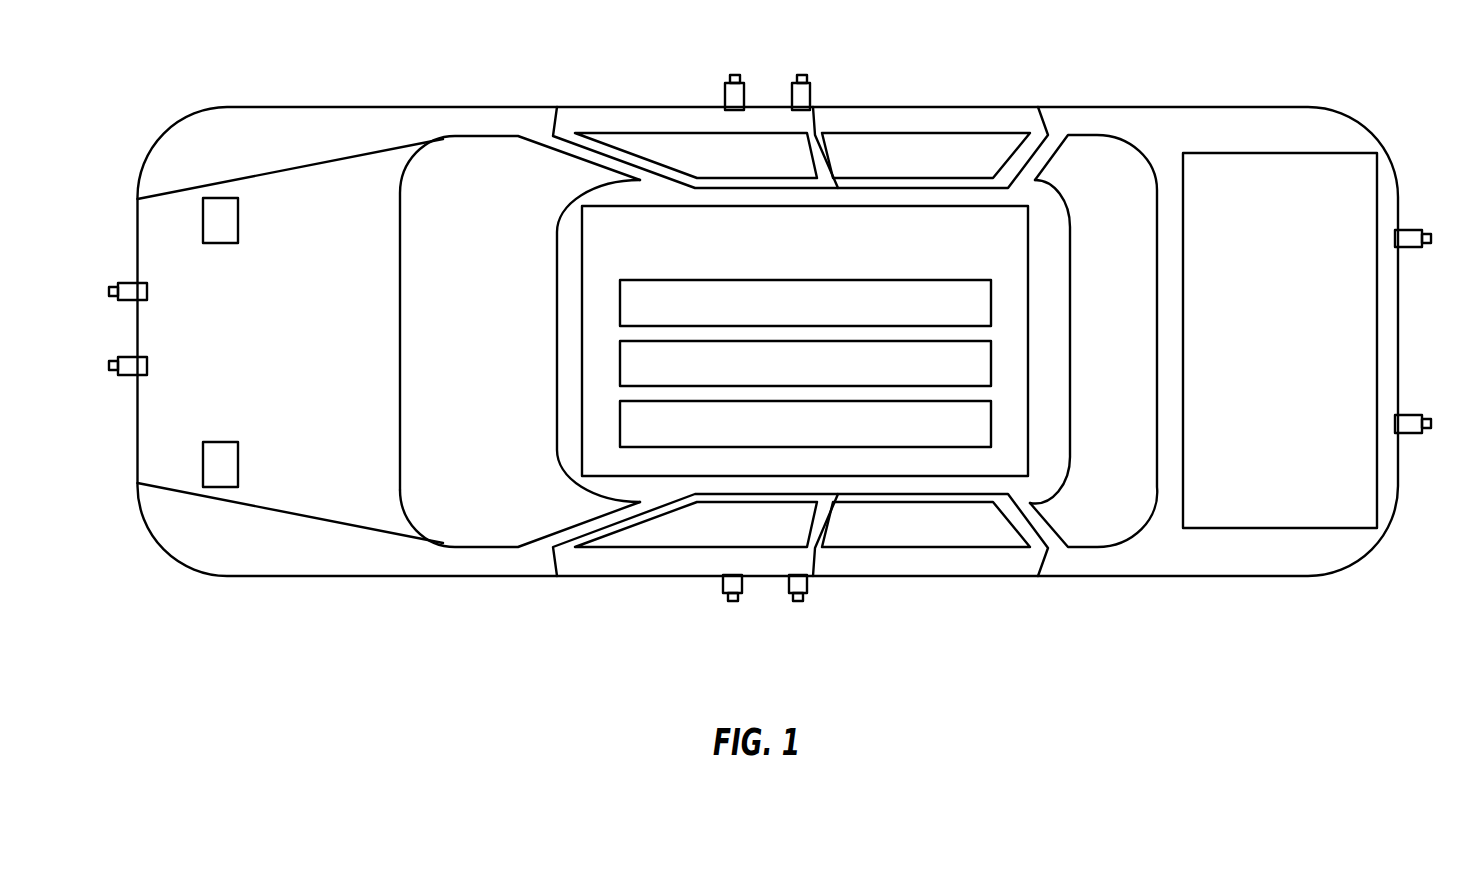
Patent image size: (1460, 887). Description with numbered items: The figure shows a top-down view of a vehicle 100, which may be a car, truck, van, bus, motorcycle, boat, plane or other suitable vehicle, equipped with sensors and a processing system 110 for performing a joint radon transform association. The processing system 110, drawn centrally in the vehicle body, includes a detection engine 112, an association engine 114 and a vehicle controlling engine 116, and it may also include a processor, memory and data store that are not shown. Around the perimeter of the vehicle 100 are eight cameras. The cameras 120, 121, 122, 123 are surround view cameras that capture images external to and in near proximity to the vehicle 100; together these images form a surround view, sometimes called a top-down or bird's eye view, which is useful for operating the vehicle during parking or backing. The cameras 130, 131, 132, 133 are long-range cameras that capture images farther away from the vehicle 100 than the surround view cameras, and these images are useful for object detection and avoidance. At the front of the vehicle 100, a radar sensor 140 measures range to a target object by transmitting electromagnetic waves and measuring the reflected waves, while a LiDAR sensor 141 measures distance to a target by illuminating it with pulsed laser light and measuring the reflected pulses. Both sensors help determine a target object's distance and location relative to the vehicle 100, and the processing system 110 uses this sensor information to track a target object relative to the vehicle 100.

The vehicle 100 is at (287, 107).
The processing system 110 is at (823, 240).
The detection engine 112 is at (978, 315).
The association engine 114 is at (978, 376).
The vehicle controlling engine 116 is at (978, 436).
The camera 120 is at (130, 283).
The camera 121 is at (732, 601).
The camera 122 is at (738, 75).
The camera 123 is at (1407, 247).
The camera 130 is at (130, 357).
The camera 131 is at (797, 601).
The camera 132 is at (803, 75).
The camera 133 is at (1407, 433).
The radar sensor 140 is at (213, 198).
The LiDAR sensor 141 is at (213, 442).